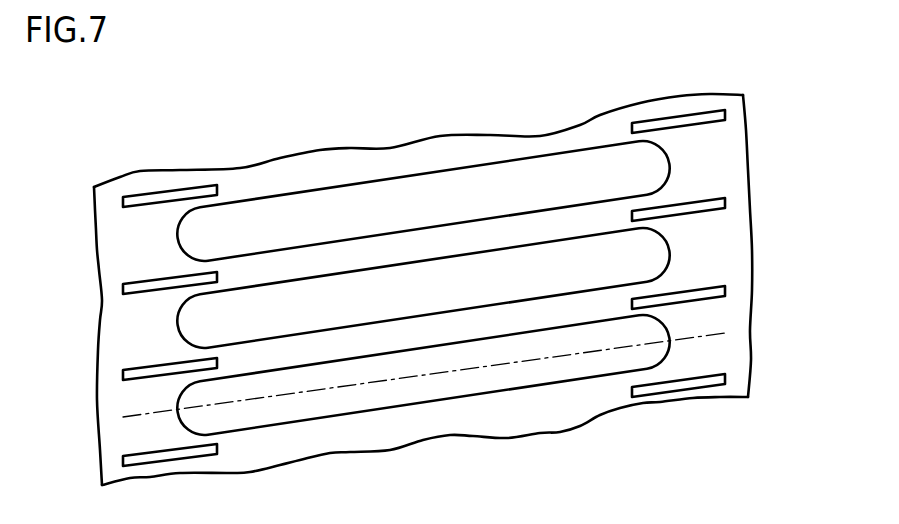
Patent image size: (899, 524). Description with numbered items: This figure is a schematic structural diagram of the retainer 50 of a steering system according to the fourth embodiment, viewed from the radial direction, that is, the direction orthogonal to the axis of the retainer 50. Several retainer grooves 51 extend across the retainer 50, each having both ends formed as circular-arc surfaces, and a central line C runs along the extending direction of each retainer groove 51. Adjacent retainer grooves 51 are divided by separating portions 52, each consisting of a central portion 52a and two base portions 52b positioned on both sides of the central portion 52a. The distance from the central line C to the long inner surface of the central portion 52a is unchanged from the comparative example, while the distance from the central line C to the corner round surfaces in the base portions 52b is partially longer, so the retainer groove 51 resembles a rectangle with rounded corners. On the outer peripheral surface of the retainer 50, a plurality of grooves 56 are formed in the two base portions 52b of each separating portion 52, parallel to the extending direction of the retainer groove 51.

The retainer 50 is at (288, 152).
The retainer groove 51 is at (398, 187).
The separating portion 52 is at (818, 222).
The central portion 52a is at (433, 332).
The base portion 52b is at (677, 290).
The groove 56 is at (683, 206).
The central line C is at (143, 415).